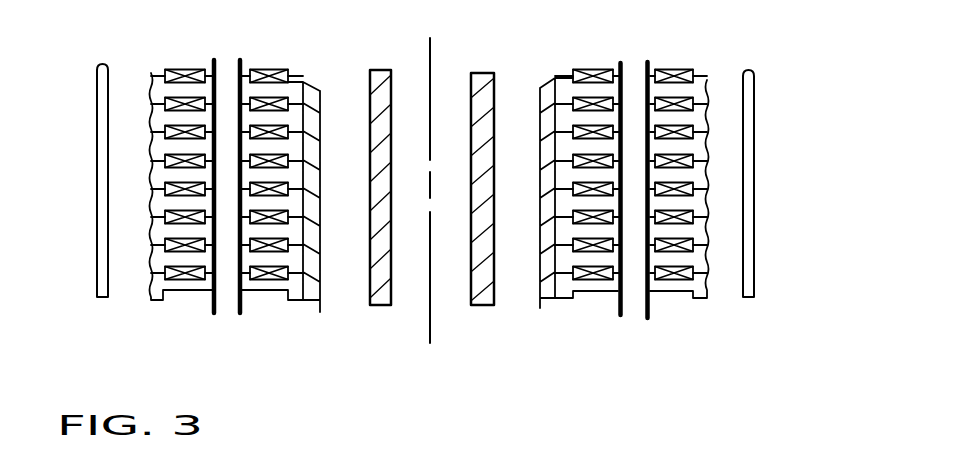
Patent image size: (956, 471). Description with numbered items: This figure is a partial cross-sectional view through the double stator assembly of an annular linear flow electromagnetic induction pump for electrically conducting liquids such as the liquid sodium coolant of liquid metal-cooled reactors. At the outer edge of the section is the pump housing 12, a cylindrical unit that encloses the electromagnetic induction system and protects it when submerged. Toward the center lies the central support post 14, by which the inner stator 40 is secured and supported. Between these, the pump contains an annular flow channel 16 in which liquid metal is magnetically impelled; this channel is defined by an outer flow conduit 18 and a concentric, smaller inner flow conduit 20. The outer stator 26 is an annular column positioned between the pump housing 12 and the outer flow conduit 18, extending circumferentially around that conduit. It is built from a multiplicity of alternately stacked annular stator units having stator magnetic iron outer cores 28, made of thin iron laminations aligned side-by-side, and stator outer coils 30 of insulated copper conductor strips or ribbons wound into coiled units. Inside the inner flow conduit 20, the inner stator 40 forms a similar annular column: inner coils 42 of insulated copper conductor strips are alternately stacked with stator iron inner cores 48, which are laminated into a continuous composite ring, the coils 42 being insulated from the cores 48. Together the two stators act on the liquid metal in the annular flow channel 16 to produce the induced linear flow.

The pump housing 12 is at (753, 90).
The central support post 14 is at (481, 73).
The annular flow channel 16 is at (633, 310).
The outer flow conduit 18 is at (648, 72).
The inner flow conduit 20 is at (622, 72).
The outer stator 26 is at (674, 285).
The stator magnetic iron outer core 28 is at (175, 277).
The stator outer coil 30 is at (190, 291).
The inner stator 40 is at (577, 278).
The inner coil 42 is at (288, 280).
The stator iron inner core 48 is at (269, 291).